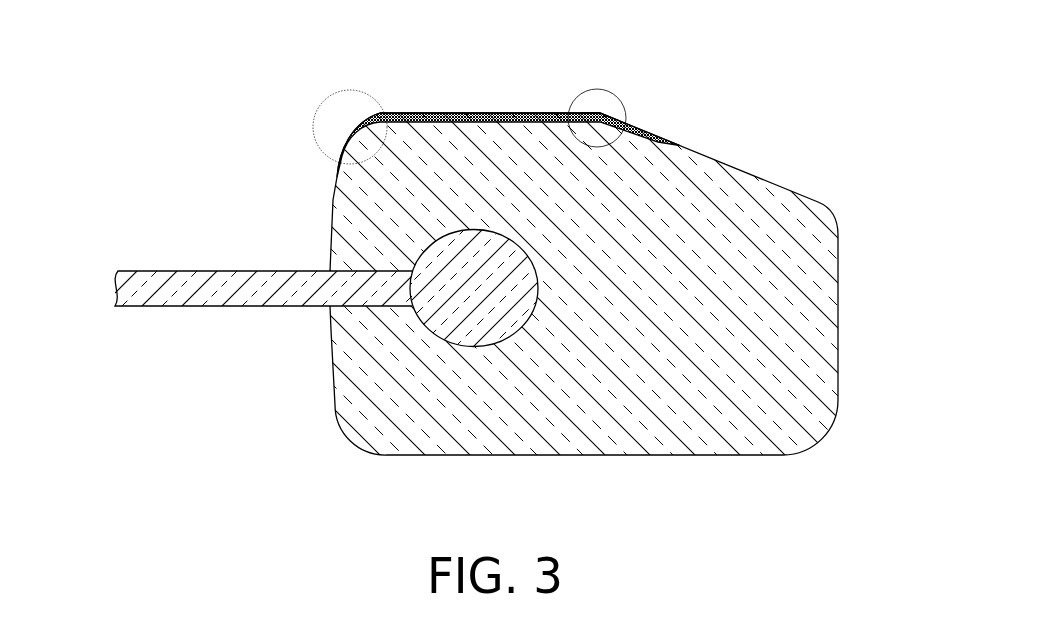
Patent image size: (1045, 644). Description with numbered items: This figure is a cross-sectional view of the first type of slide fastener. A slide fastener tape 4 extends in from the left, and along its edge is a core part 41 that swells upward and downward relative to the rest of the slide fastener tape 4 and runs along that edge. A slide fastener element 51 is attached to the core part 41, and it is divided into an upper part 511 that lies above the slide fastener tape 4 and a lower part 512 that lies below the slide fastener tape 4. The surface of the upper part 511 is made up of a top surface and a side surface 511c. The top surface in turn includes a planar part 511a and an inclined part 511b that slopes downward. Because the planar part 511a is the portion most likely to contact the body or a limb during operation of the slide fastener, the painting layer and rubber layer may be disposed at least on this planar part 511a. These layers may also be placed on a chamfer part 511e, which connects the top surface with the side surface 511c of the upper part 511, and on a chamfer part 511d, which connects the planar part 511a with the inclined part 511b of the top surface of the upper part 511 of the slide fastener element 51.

The slide fastener tape 4 is at (162, 293).
The core part 41 is at (450, 263).
The slide fastener element 51 is at (571, 271).
The upper part 511 is at (670, 205).
The planar part 511a is at (445, 113).
The inclined part 511b is at (790, 197).
The side surface 511c is at (841, 239).
The chamfer part 511d is at (618, 100).
The chamfer part 511e is at (325, 100).
The lower part 512 is at (700, 413).